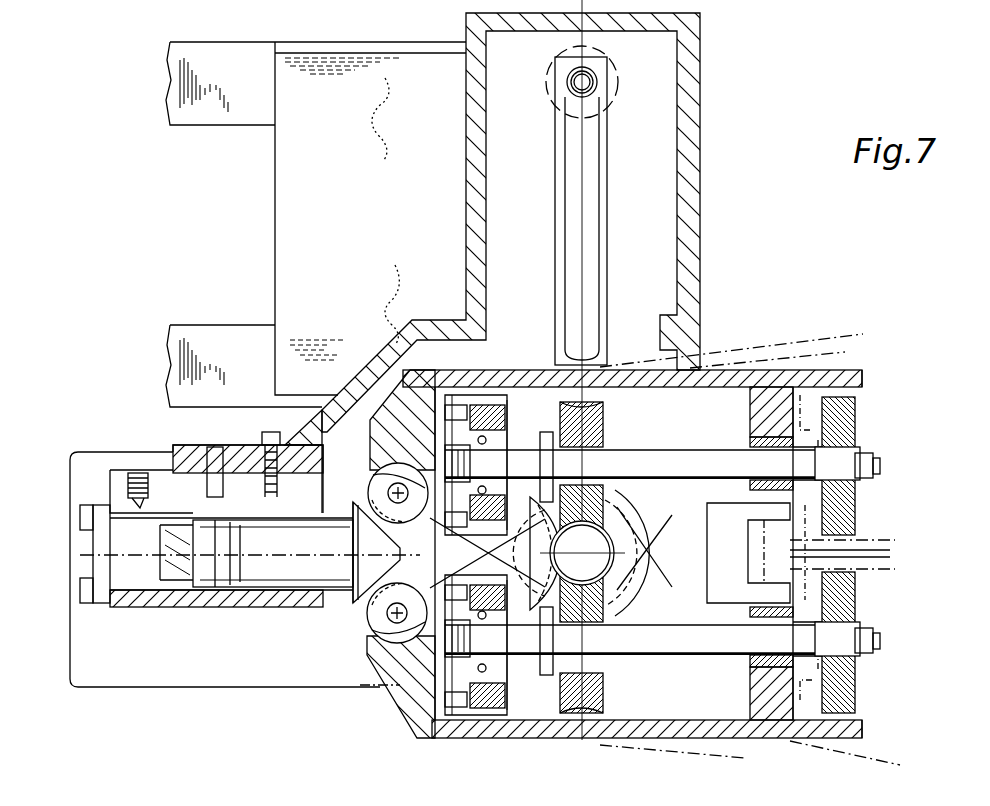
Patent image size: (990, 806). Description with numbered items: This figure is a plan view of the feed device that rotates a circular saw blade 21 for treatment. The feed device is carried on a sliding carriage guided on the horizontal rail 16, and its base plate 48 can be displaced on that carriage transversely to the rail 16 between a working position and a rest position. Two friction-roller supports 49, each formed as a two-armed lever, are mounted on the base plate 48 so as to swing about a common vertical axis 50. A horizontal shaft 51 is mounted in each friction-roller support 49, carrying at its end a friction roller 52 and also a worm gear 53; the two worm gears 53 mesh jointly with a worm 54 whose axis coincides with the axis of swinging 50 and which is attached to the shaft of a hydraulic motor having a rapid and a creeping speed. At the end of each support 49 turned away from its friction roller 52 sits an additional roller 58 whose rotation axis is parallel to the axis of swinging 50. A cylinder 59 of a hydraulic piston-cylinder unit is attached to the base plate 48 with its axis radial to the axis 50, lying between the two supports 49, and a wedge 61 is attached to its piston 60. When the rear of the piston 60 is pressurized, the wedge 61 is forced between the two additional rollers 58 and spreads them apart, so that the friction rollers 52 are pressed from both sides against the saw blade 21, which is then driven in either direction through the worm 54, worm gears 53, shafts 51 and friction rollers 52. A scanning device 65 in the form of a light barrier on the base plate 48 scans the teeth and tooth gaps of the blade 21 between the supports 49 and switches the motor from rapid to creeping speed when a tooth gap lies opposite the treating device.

The horizontal rail 16 is at (215, 100).
The circular saw blade 21 is at (927, 542).
The base plate 48 is at (655, 118).
The friction-roller support 49 is at (780, 385).
The vertical axis of swinging 50 is at (626, 572).
The horizontal shaft 51 is at (668, 457).
The friction roller 52 is at (840, 362).
The worm gear 53 is at (605, 407).
The worm 54 is at (637, 557).
The additional roller 58 is at (378, 476).
The cylinder 59 is at (140, 600).
The piston 60 is at (207, 590).
The wedge 61 is at (343, 595).
The scanning device 65 is at (740, 549).